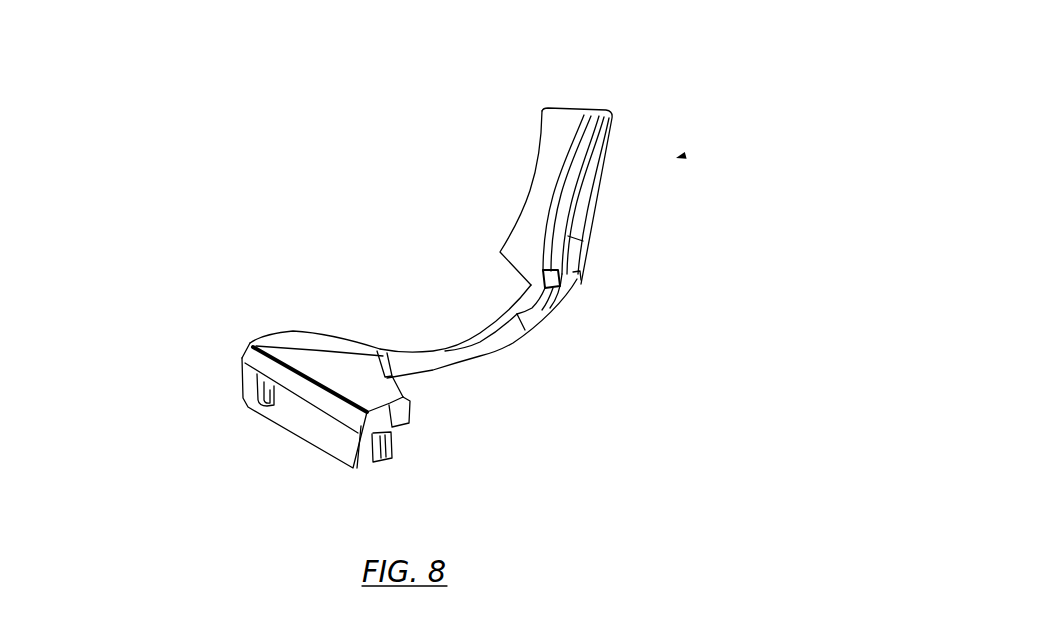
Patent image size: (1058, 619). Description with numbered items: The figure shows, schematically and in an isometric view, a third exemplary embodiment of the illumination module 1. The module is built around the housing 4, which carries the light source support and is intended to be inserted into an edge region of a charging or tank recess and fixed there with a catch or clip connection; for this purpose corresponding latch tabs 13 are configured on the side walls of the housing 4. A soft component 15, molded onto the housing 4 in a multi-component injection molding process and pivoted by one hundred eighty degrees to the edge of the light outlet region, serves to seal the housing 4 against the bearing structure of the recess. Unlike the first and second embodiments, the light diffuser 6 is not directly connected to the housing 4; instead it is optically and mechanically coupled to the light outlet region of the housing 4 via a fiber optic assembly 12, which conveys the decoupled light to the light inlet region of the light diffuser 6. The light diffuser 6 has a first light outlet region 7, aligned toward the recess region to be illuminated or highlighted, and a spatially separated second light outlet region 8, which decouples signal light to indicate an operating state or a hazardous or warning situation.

The illumination module 1 is at (345, 218).
The housing 4 is at (332, 438).
The light diffuser 6 is at (680, 157).
The first light outlet region 7 is at (535, 142).
The second light outlet region 8 is at (542, 205).
The fiber optic assembly 12 is at (483, 350).
The latch tab 13 is at (390, 448).
The soft component 15 is at (248, 351).